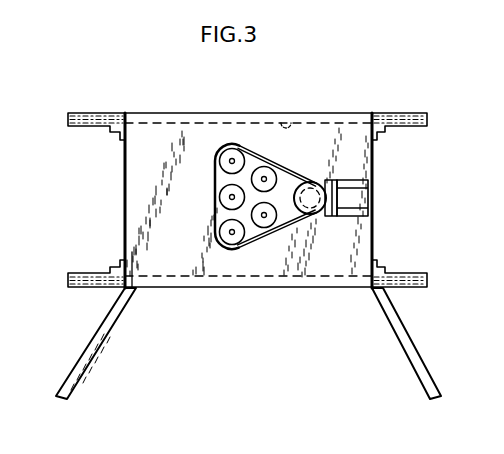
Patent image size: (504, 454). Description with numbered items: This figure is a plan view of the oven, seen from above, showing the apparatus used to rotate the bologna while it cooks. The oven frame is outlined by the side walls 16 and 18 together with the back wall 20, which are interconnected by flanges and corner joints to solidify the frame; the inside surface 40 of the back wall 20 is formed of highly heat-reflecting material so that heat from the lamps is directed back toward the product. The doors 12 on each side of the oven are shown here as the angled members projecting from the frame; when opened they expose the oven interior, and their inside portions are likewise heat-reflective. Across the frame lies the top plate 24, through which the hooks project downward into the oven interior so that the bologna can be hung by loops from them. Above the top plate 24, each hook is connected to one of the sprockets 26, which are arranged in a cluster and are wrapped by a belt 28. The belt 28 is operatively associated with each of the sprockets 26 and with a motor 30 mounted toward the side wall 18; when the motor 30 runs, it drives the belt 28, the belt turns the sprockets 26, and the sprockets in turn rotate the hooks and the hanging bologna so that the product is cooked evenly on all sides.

The doors 12 is at (107, 330).
The side wall 16 is at (124, 199).
The side wall 18 is at (372, 182).
The back wall 20 is at (226, 113).
The top plate 24 is at (161, 165).
The sprockets 26 is at (229, 232).
The belt 28 is at (229, 197).
The motor 30 is at (337, 180).
The inside surface of the back wall 40 is at (286, 118).